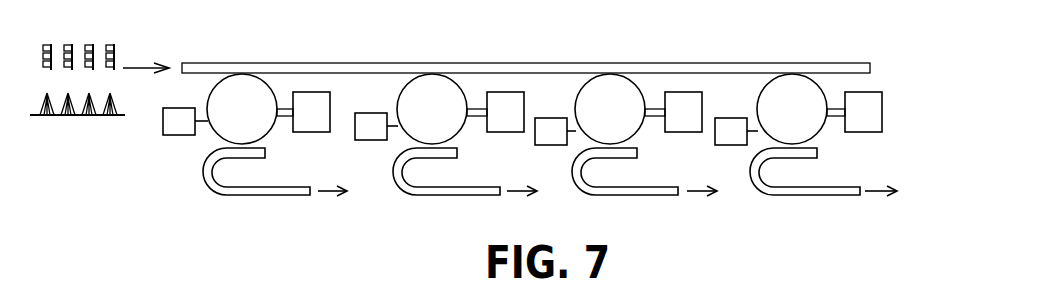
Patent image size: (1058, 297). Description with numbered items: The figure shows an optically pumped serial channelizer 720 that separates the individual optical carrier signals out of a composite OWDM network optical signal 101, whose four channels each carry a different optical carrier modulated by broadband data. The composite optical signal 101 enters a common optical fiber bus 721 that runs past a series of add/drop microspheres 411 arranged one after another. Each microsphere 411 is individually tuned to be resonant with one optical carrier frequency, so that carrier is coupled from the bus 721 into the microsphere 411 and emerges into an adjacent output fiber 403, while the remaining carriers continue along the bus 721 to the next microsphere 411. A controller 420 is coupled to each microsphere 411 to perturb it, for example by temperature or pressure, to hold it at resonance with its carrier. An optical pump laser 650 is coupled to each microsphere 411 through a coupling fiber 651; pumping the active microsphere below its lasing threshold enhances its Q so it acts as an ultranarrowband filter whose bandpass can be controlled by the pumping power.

The serial channelizer 720 is at (497, 24).
The composite OWDM network optical signal 101 is at (127, 50).
The optical fiber bus 721 is at (273, 63).
The add/drop microsphere 411 is at (209, 103).
The controller 420 is at (181, 136).
The optical pump laser 650 is at (331, 107).
The coupling fiber 651 is at (279, 118).
The output fiber 403 is at (258, 187).